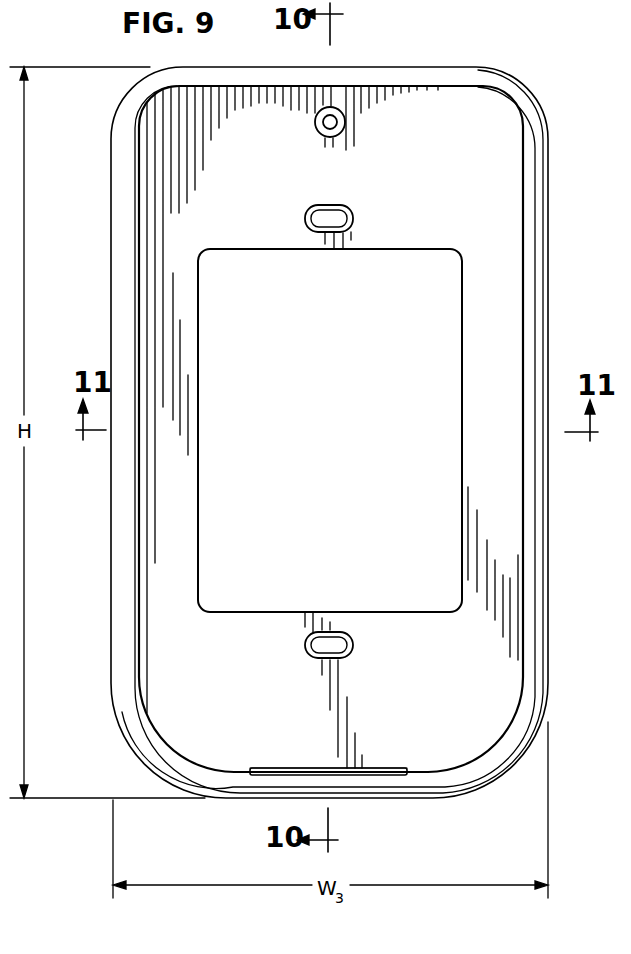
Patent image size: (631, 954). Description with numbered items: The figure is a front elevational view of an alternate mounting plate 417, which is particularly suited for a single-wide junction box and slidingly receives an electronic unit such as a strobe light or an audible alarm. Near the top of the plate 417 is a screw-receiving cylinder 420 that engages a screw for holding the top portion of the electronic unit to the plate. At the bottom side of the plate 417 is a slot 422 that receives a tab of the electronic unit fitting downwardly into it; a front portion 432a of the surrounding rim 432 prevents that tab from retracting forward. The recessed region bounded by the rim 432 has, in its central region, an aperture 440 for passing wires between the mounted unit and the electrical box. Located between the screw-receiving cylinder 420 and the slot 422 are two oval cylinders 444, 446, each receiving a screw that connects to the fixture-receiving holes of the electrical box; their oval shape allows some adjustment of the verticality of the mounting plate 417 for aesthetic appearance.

The mounting plate 417 is at (532, 76).
The screw-receiving cylinder 420 is at (346, 122).
The slot 422 is at (383, 768).
The rim 432 is at (540, 322).
The front portion of the rim 432a is at (363, 782).
The aperture 440 is at (460, 462).
The oval cylinder 444 is at (307, 231).
The oval cylinder 446 is at (333, 632).